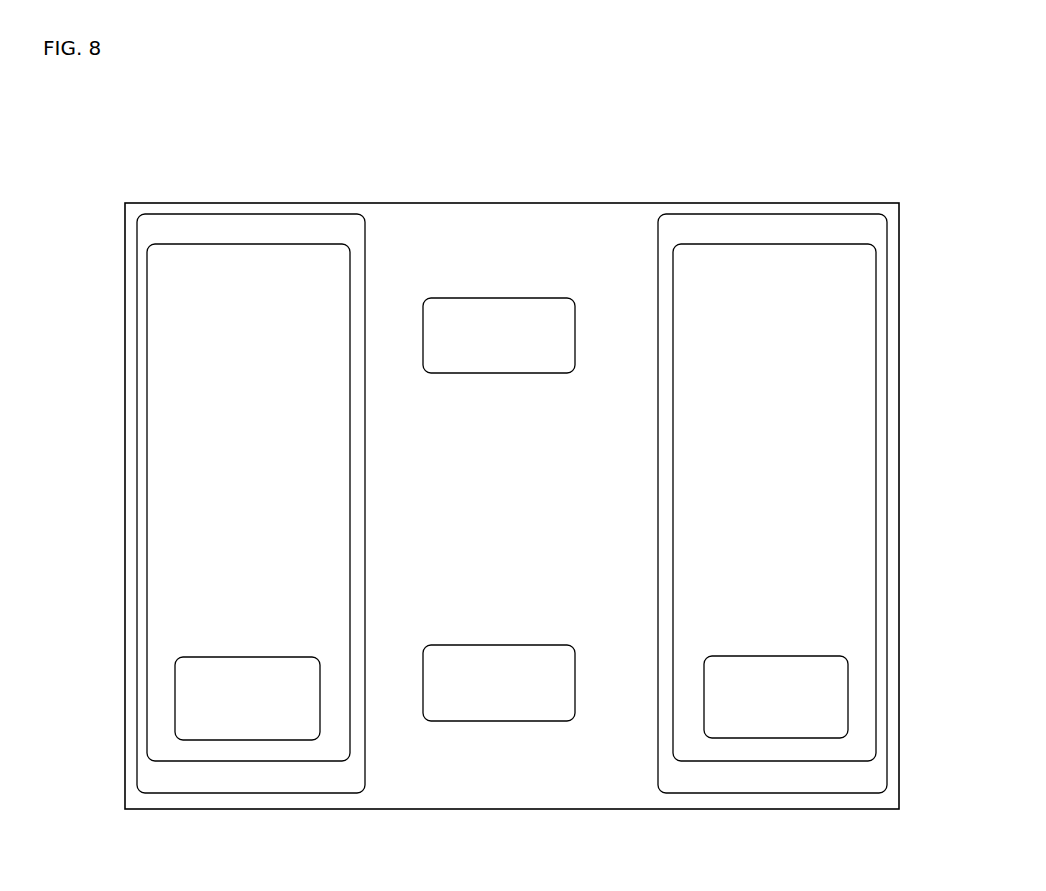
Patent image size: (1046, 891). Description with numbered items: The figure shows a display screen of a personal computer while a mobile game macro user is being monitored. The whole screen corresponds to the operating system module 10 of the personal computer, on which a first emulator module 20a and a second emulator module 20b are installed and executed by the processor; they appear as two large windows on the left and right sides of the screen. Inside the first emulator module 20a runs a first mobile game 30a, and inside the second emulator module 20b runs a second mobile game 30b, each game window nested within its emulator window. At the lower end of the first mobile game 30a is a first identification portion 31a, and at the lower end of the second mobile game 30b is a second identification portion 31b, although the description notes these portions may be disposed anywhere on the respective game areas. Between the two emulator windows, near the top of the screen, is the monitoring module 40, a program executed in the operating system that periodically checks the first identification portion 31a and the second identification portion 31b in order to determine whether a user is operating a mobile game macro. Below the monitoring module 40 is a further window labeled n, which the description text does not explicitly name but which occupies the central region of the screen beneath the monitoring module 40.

The operating system module 10 is at (527, 203).
The first emulator module 20a is at (312, 214).
The second emulator module 20b is at (707, 214).
The first mobile game 30a is at (147, 325).
The second mobile game 30b is at (876, 324).
The first identification portion 31a is at (175, 698).
The second identification portion 31b is at (848, 697).
The monitoring module 40 is at (458, 298).
The n-th element n is at (461, 721).